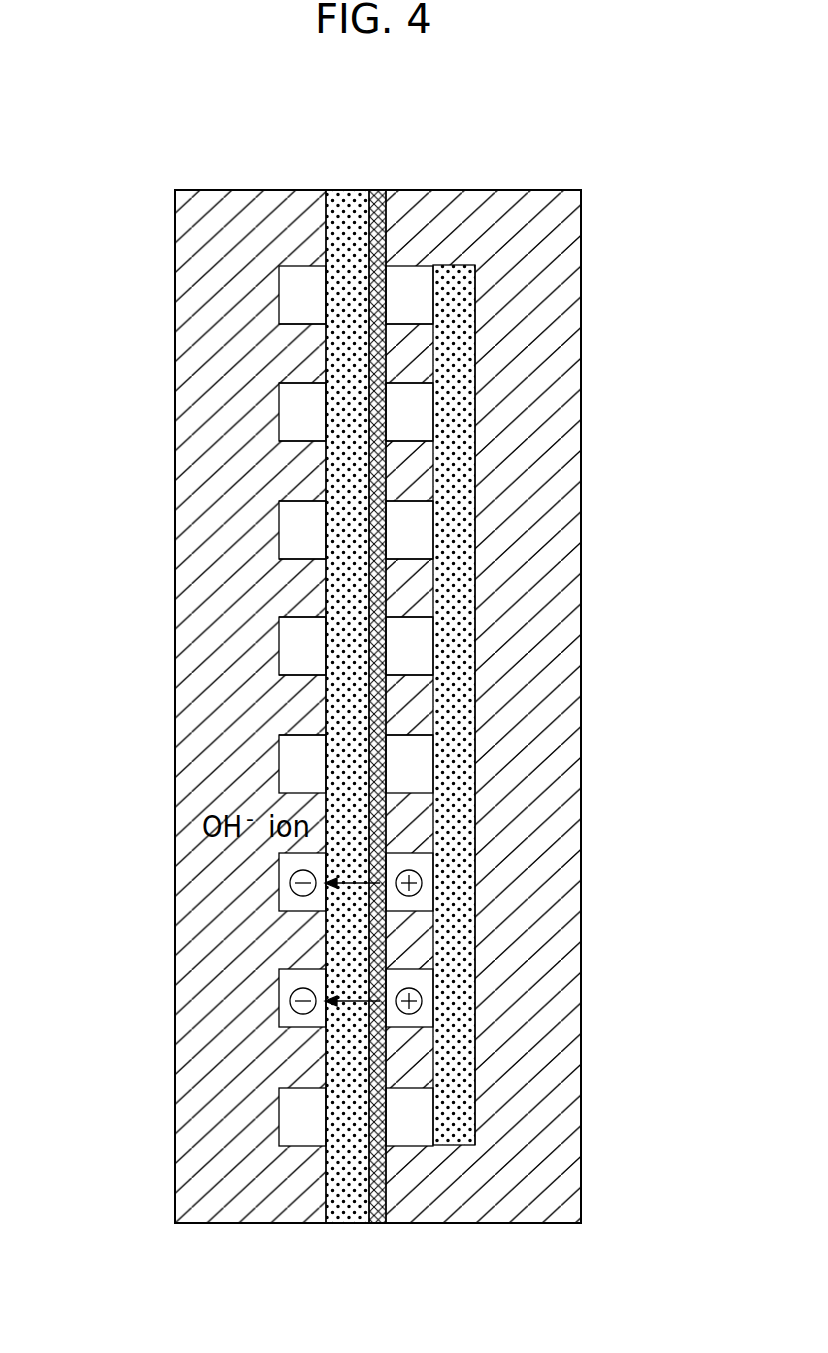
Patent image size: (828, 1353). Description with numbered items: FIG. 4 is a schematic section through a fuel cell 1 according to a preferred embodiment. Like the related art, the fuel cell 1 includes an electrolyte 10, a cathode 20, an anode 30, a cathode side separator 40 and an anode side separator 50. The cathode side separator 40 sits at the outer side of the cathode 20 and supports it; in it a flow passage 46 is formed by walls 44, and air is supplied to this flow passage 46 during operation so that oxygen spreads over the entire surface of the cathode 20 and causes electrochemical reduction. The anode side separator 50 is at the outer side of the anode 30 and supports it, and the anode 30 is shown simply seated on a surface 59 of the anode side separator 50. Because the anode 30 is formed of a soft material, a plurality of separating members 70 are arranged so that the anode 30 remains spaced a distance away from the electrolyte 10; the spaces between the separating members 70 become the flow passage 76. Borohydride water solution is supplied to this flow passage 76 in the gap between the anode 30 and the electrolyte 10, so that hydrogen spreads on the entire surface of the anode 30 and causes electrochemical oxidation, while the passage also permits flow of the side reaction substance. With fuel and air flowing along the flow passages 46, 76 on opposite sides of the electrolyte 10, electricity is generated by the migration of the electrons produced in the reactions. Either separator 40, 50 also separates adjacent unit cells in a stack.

The fuel cell 1 is at (513, 177).
The electrolyte 10 is at (377, 1227).
The cathode 20 is at (341, 1226).
The anode 30 is at (474, 1097).
The cathode side separator 40 is at (174, 915).
The walls 44 is at (300, 473).
The flow passage 46 is at (288, 1097).
The anode side separator 50 is at (582, 902).
The surface 59 is at (474, 772).
The separating members 70 is at (407, 348).
The flow passage 76 is at (410, 533).